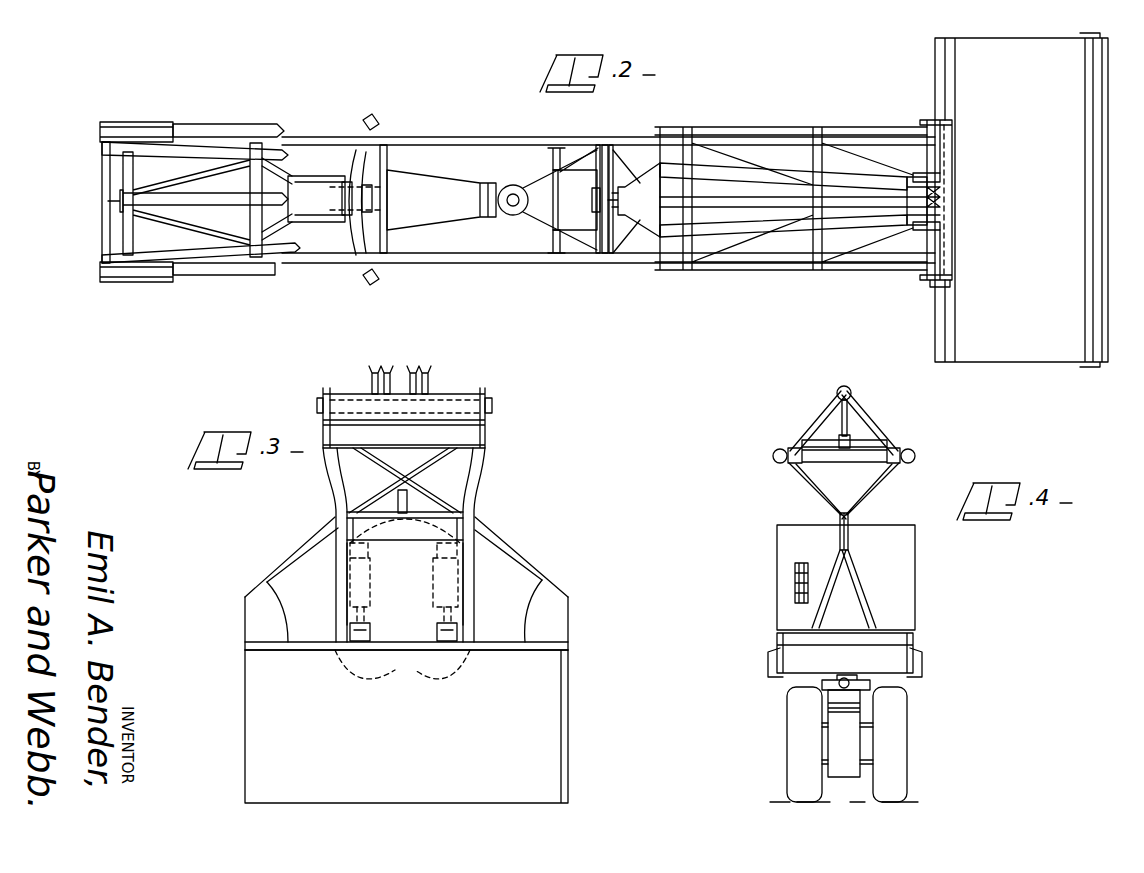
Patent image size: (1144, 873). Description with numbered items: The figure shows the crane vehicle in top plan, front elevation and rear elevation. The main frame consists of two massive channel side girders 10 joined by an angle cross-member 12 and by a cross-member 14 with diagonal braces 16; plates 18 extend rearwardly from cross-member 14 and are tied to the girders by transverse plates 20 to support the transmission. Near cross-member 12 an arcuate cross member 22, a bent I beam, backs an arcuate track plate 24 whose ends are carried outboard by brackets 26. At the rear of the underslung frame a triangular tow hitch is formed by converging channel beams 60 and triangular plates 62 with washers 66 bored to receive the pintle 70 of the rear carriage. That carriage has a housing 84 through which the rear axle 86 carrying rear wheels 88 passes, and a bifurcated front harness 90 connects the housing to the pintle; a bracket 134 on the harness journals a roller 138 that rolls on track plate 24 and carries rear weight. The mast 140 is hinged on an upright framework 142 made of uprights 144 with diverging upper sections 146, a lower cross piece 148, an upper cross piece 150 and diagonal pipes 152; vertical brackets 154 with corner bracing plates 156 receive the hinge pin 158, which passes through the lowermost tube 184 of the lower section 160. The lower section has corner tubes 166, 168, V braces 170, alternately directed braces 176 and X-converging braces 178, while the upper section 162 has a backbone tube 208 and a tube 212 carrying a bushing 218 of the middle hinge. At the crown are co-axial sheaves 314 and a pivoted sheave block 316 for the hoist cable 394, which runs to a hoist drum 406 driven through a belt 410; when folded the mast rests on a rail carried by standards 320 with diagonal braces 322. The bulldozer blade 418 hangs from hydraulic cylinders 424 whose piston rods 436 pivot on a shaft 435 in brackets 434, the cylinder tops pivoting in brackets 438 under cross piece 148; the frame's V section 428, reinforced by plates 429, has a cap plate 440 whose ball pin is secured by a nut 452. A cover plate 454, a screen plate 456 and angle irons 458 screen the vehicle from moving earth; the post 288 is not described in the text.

In FIG. 2, the side girders 10 is at (462, 137).
In FIG. 4, the side girders 10 is at (780, 640).
In FIG. 2, the cross-member 12 is at (387, 155).
In FIG. 2, the cross-member 14 is at (605, 145).
In FIG. 2, the diagonal braces 16 is at (620, 150).
In FIG. 2, the plates 18 is at (597, 160).
In FIG. 2, the transverse plates 20 is at (552, 150).
In FIG. 2, the arcuate cross member 22 is at (355, 150).
In FIG. 4, the arcuate cross member 22 is at (790, 655).
In FIG. 2, the arcuate plate 24 is at (358, 242).
In FIG. 4, the arcuate plate 24 is at (925, 677).
In FIG. 2, the brackets 26 is at (375, 121).
In FIG. 4, the brackets 26 is at (770, 670).
In FIG. 2, the converging channel beams 60 is at (548, 242).
In FIG. 2, the triangular plates 62 is at (535, 222).
In FIG. 2, the washers 66 is at (510, 215).
In FIG. 2, the pintle 70 is at (513, 187).
In FIG. 2, the housing 84 is at (252, 207).
In FIG. 4, the housing 84 is at (855, 743).
In FIG. 2, the rear axle 86 is at (315, 243).
In FIG. 4, the rear axle 86 is at (825, 735).
In FIG. 2, the rear wheels 88 is at (305, 148).
In FIG. 4, the rear wheels 88 is at (800, 762).
In FIG. 2, the front harness 90 is at (417, 245).
In FIG. 4, the bracket 134 is at (847, 680).
In FIG. 2, the roller 138 is at (372, 191).
In FIG. 2, the mast 140 is at (771, 292).
In FIG. 2, the upright framework 142 is at (935, 84).
In FIG. 3, the upright framework 142 is at (500, 452).
In FIG. 3, the uprights 144 is at (472, 575).
In FIG. 3, the upper sections 146 is at (335, 478).
In FIG. 3, the lower cross piece 148 is at (460, 525).
In FIG. 3, the upper cross piece 150 is at (470, 440).
In FIG. 3, the diagonally disposed pipes 152 is at (388, 431).
In FIG. 3, the vertical brackets 154 is at (325, 394).
In FIG. 3, the corner bracing plates 156 is at (325, 420).
In FIG. 2, the hinge pin 158 is at (950, 255).
In FIG. 3, the hinge pin 158 is at (445, 400).
In FIG. 2, the lower section 160 is at (716, 117).
In FIG. 4, the lower section 160 is at (894, 499).
In FIG. 2, the upper section 162 is at (800, 164).
In FIG. 4, the upper section 162 is at (885, 408).
In FIG. 2, the corner tube 166 is at (697, 270).
In FIG. 4, the corner tube 166 is at (916, 456).
In FIG. 2, the corner tube 168 is at (850, 130).
In FIG. 4, the corner tube 168 is at (772, 458).
In FIG. 2, the diverging braces 170 is at (252, 148).
In FIG. 4, the diverging braces 170 is at (795, 475).
In FIG. 2, the diagonal braces 176 is at (282, 172).
In FIG. 2, the braces 178 is at (735, 158).
In FIG. 2, the lowermost tube 184 is at (946, 148).
In FIG. 3, the lowermost tube 184 is at (350, 390).
In FIG. 2, the backbone tube 208 is at (183, 190).
In FIG. 4, the backbone tube 208 is at (850, 386).
In FIG. 2, the tube 212 is at (197, 140).
In FIG. 2, the bushing 218 is at (100, 146).
In FIG. 4, the bushing 218 is at (792, 448).
In FIG. 4, the center post 288 is at (840, 530).
In FIG. 2, the co-axial sheaves 314 is at (938, 176).
In FIG. 3, the co-axial sheaves 314 is at (415, 372).
In FIG. 2, the sheave block 316 is at (945, 195).
In FIG. 4, the standards 320 is at (822, 588).
In FIG. 4, the diagonal braces 322 is at (850, 562).
In FIG. 2, the hoist cable 394 is at (913, 172).
In FIG. 4, the hoist drum 406 is at (777, 540).
In FIG. 4, the belt 410 is at (795, 575).
In FIG. 2, the bulldozer blade 418 is at (1104, 342).
In FIG. 3, the bulldozer blade 418 is at (584, 694).
In FIG. 3, the hydraulic cylinders 424 is at (404, 575).
In FIG. 2, the V section 428 is at (630, 185).
In FIG. 2, the upper and lower plates 429 is at (640, 225).
In FIG. 3, the brackets 434 is at (402, 664).
In FIG. 3, the shaft 435 is at (372, 629).
In FIG. 3, the piston rods 436 is at (404, 605).
In FIG. 3, the brackets 438 is at (405, 527).
In FIG. 2, the reinforcing cap plate 440 is at (650, 212).
In FIG. 2, the nut 452 is at (594, 197).
In FIG. 2, the cover plate 454 is at (1030, 340).
In FIG. 3, the cover plate 454 is at (515, 638).
In FIG. 3, the screen plate 456 is at (248, 618).
In FIG. 3, the angle irons 458 is at (290, 567).